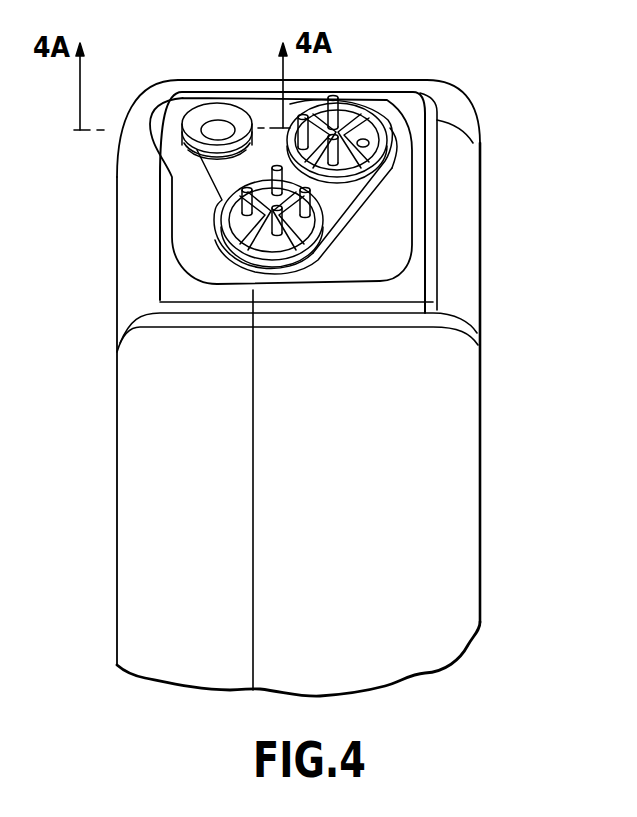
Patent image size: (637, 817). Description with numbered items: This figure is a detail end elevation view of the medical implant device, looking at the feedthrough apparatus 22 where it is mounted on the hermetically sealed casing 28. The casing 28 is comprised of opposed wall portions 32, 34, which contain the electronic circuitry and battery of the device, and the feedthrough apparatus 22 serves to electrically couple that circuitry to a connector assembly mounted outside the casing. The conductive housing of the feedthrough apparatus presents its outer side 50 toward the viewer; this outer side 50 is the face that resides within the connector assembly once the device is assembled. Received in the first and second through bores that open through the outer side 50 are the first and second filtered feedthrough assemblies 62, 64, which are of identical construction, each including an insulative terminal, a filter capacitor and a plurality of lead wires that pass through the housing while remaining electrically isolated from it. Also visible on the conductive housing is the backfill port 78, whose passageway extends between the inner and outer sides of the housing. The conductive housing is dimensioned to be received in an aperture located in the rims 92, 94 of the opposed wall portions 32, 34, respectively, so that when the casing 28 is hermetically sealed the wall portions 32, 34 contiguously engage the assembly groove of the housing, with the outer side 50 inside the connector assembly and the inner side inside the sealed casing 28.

The feedthrough apparatus 22 is at (410, 227).
The hermetically sealed casing 28 is at (443, 453).
The first wall portion 32 is at (140, 550).
The second wall portion 34 is at (457, 547).
The outer side 50 is at (403, 180).
The first filtered feedthrough assembly 62 is at (221, 215).
The second filtered feedthrough assembly 64 is at (367, 111).
The backfill port 78 is at (227, 116).
The rim of first wall portion 92 is at (256, 588).
The rim of second wall portion 94 is at (252, 633).